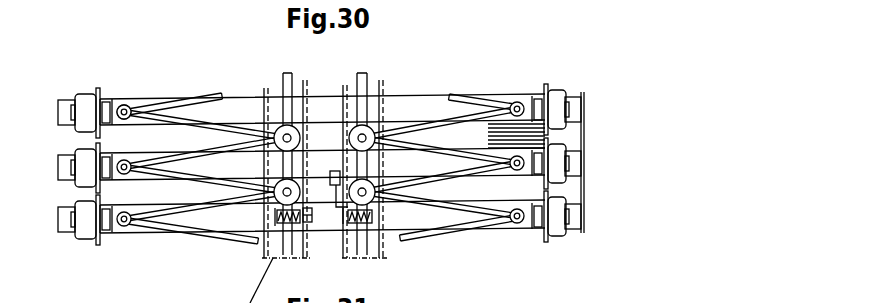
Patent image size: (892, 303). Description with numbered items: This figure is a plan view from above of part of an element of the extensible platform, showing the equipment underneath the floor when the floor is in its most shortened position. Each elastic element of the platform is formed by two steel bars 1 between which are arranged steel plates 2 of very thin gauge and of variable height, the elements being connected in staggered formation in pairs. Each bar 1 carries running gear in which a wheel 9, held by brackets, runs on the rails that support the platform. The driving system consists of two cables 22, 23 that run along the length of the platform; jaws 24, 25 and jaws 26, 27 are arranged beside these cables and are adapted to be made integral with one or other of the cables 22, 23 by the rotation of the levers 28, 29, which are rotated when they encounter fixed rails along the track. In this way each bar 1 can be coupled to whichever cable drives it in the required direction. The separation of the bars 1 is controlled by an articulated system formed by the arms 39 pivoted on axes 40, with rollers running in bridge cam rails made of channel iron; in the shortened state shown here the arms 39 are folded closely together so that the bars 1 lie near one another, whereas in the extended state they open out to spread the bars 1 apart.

The steel bar 1 is at (233, 110).
The steel plate 2 is at (583, 130).
The wheel 9 is at (83, 118).
The cable 22 is at (292, 80).
The cable 23 is at (367, 77).
The jaw 24 is at (277, 223).
The jaw 25 is at (303, 226).
The jaw 26 is at (347, 221).
The jaw 27 is at (377, 226).
The lever 28 is at (308, 207).
The lever 29 is at (335, 171).
The articulated arm 39 is at (195, 100).
The axis 40 is at (127, 109).